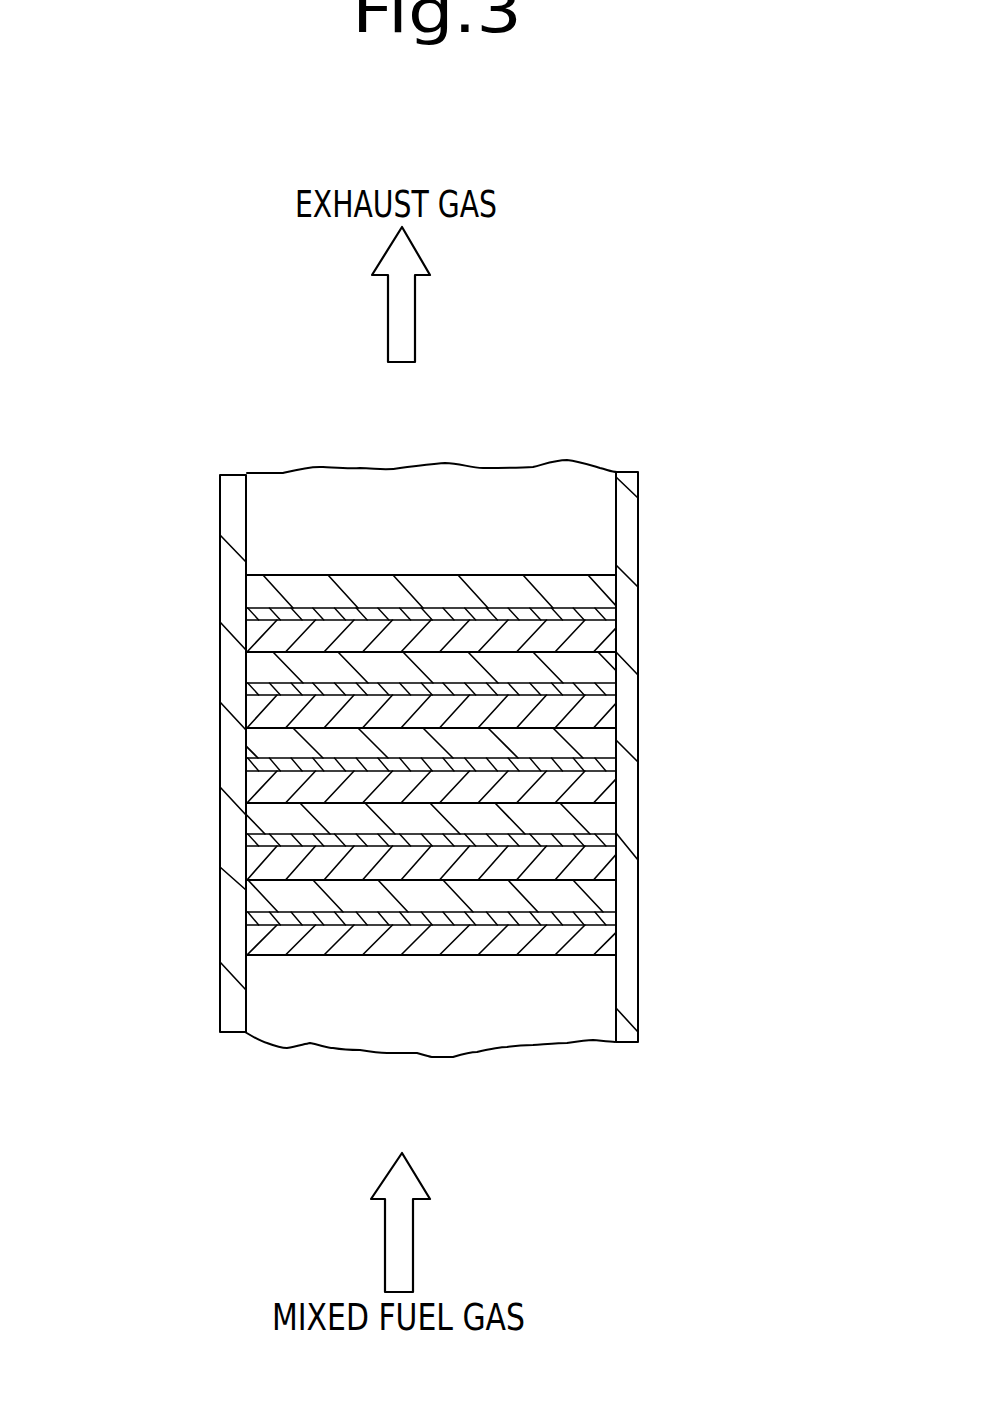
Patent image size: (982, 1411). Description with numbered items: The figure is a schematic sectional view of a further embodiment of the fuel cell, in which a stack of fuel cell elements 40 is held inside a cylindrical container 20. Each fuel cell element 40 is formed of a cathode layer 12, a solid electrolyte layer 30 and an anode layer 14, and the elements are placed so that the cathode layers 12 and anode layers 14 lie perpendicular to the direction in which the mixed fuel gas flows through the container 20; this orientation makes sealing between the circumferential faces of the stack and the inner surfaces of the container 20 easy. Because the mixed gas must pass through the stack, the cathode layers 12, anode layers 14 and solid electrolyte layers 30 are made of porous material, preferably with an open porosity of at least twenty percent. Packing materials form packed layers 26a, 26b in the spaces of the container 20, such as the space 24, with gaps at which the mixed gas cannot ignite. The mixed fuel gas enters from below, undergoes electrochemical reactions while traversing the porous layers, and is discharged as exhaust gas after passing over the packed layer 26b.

The cathode layer 12 is at (413, 743).
The anode layer 14 is at (454, 787).
The solid electrolyte layer 30 is at (421, 766).
The fuel cell element 40 is at (518, 769).
The container 20 is at (220, 738).
The space 24 is at (608, 497).
The packed layer 26a is at (277, 1008).
The packed layer 26b is at (273, 538).